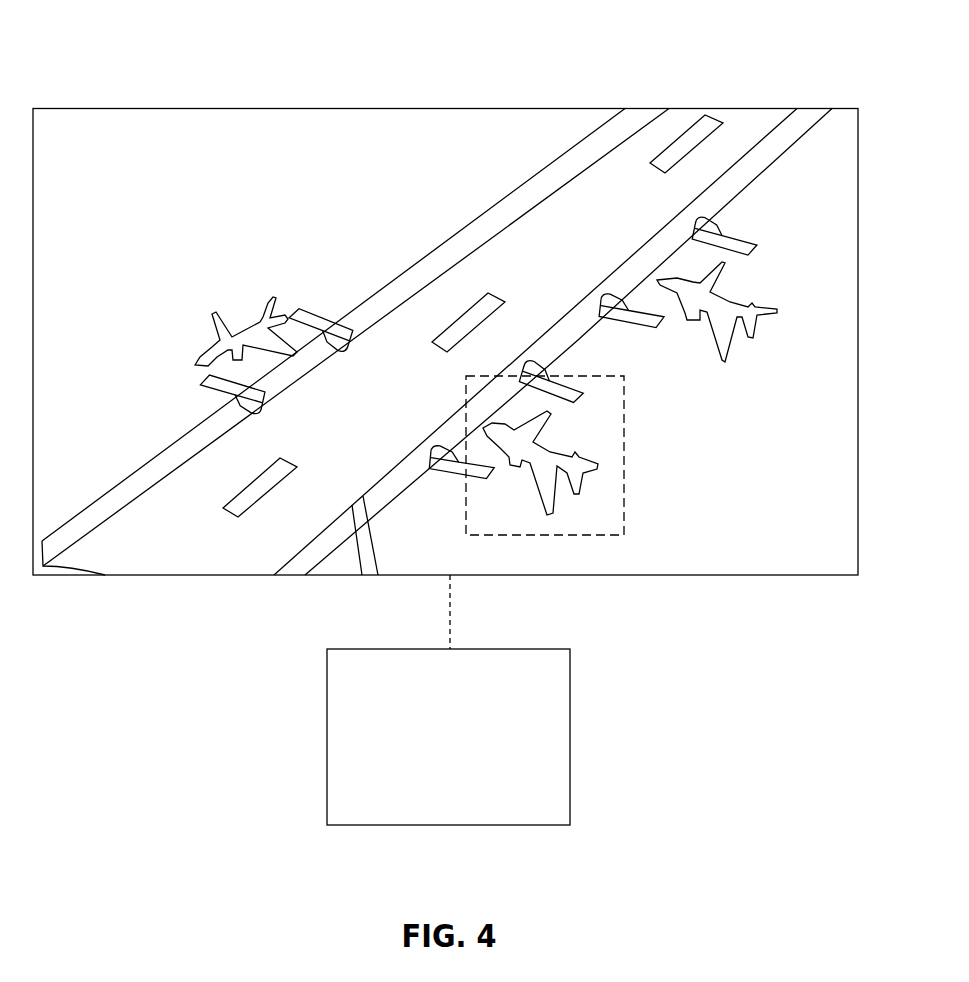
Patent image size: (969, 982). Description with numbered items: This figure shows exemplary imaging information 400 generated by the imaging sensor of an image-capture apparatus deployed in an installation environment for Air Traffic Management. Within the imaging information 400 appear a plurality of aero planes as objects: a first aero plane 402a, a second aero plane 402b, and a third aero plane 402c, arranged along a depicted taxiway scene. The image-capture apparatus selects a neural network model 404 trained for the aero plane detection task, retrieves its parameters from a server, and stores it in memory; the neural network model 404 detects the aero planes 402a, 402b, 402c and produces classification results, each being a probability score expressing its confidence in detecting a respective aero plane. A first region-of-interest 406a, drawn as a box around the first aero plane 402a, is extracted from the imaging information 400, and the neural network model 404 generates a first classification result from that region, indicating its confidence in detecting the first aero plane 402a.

The imaging information 400 is at (806, 55).
The first aero plane 402a is at (580, 493).
The second aero plane 402b is at (753, 338).
The third aero plane 402c is at (212, 347).
The neural network model 404 is at (466, 763).
The first region-of-interest 406a is at (624, 462).